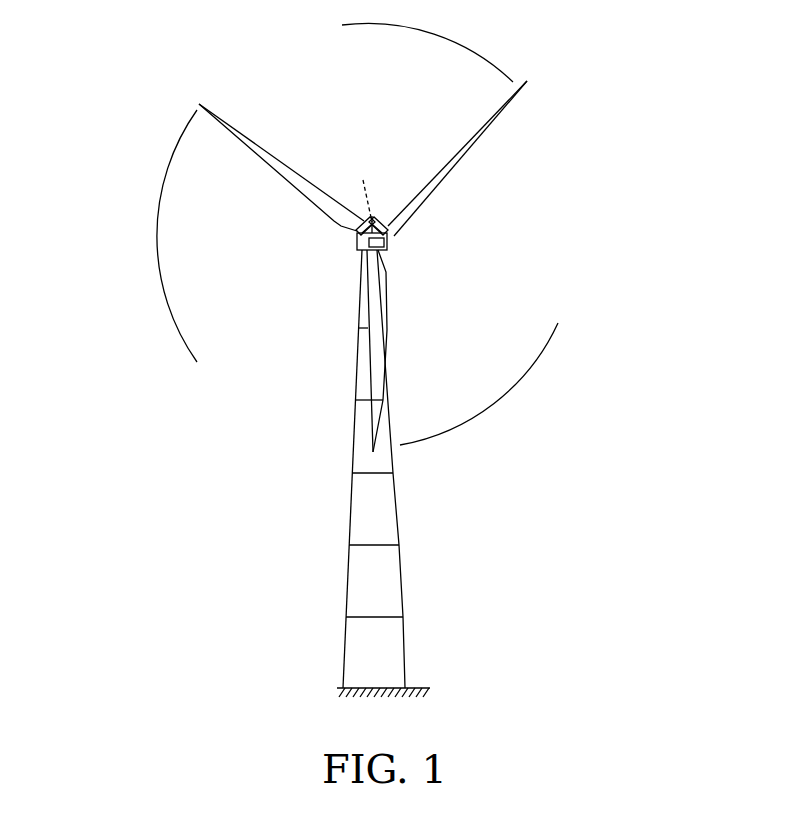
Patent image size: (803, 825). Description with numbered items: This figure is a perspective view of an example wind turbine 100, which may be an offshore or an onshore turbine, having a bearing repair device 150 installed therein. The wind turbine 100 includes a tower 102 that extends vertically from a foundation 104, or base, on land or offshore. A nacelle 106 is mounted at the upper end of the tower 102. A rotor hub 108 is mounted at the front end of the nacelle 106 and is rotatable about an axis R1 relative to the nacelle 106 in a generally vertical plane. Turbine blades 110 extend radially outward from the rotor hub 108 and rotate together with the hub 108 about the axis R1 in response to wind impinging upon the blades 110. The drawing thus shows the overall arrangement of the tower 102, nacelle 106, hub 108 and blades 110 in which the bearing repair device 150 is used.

The wind turbine 100 is at (611, 91).
The tower 102 is at (413, 578).
The foundation 104 is at (427, 677).
The nacelle 106 is at (345, 243).
The rotor hub 108 is at (404, 234).
The turbine blades 110 is at (251, 156).
The bearing repair device 150 is at (384, 201).
The axis R1 is at (357, 180).